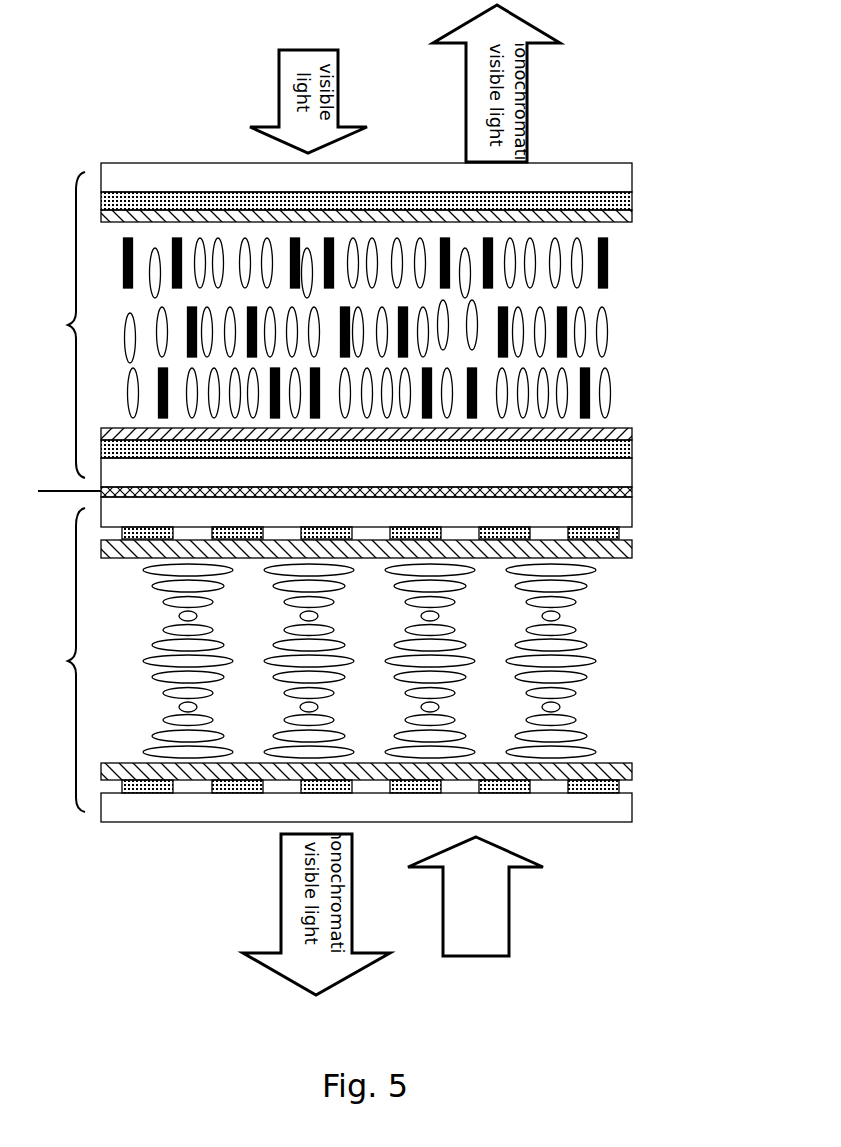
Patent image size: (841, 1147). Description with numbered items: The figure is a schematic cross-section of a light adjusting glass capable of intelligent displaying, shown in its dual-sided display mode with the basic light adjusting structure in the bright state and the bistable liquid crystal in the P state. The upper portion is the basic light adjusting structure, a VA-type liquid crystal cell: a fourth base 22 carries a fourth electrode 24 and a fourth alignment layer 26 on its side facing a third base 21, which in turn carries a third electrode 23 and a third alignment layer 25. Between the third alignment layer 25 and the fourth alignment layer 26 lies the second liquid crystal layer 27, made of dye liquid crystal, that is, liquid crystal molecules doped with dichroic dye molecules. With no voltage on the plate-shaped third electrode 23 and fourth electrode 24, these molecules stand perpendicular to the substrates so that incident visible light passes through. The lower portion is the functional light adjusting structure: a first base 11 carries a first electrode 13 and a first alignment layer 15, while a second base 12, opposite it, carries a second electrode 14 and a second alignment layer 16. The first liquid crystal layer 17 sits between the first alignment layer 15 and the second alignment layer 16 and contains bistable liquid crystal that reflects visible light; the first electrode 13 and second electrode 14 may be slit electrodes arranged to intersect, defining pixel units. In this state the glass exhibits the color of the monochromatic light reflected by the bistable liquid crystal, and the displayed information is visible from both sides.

The first base 11 is at (610, 812).
The second base 12 is at (612, 517).
The first electrode 13 is at (612, 783).
The second electrode 14 is at (612, 534).
The first alignment layer 15 is at (612, 770).
The second alignment layer 16 is at (405, 550).
The first liquid crystal layer 17 is at (610, 656).
The third base 21 is at (610, 483).
The fourth base 22 is at (610, 176).
The third electrode 23 is at (612, 455).
The fourth electrode 24 is at (610, 199).
The third alignment layer 25 is at (612, 437).
The fourth alignment layer 26 is at (612, 216).
The second liquid crystal layer 27 is at (612, 320).